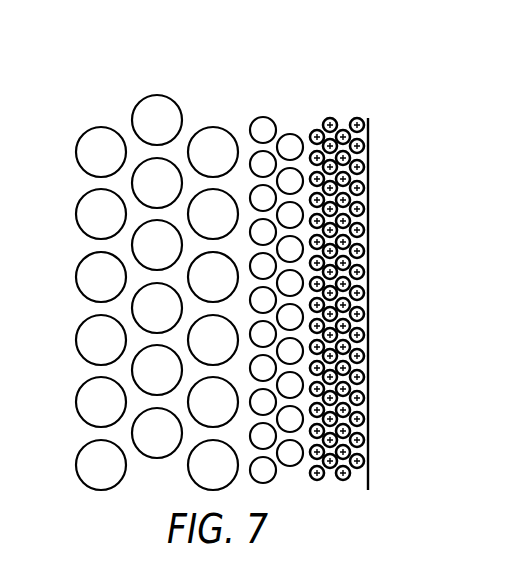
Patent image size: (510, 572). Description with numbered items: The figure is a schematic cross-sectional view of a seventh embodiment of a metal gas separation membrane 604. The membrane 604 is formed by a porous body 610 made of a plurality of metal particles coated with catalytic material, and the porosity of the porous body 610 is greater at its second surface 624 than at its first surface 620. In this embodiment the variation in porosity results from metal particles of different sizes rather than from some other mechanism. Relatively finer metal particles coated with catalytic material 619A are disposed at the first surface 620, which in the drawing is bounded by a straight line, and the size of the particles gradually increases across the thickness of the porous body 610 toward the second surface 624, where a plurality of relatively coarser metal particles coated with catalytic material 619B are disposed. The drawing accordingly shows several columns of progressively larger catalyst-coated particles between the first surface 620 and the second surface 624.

The metal gas separation membrane 604 is at (187, 103).
The relatively coarser metal particles coated with catalytic material 619B is at (89, 127).
The second surface 624 is at (88, 310).
The porous body 610 is at (232, 127).
The relatively finer metal particles coated with catalytic material 619A is at (352, 120).
The first surface 620 is at (367, 259).